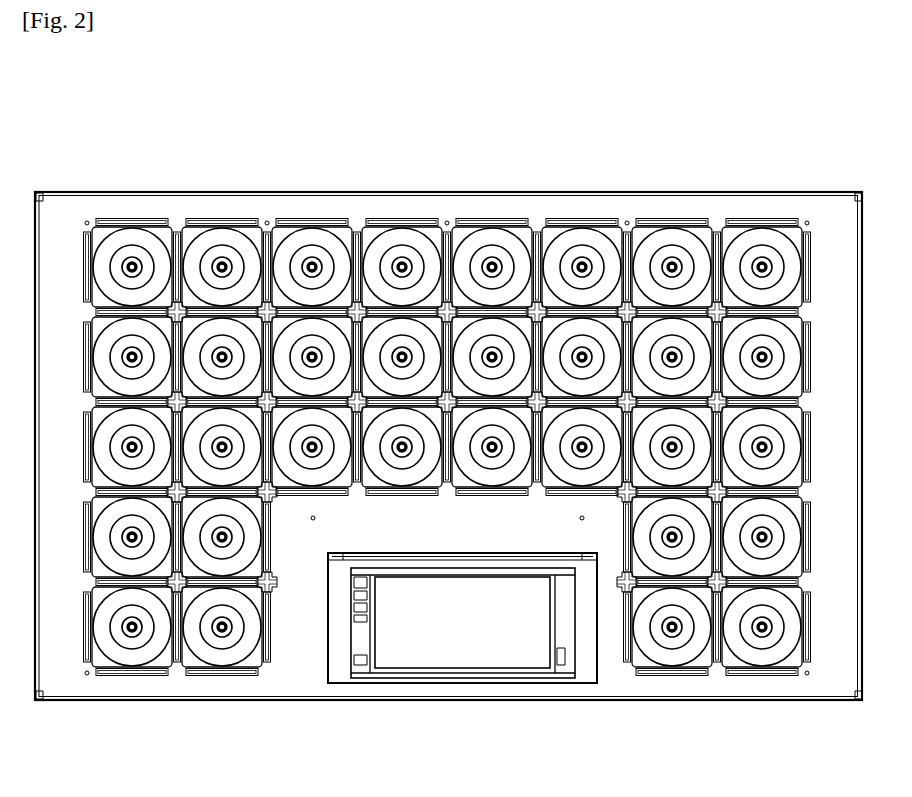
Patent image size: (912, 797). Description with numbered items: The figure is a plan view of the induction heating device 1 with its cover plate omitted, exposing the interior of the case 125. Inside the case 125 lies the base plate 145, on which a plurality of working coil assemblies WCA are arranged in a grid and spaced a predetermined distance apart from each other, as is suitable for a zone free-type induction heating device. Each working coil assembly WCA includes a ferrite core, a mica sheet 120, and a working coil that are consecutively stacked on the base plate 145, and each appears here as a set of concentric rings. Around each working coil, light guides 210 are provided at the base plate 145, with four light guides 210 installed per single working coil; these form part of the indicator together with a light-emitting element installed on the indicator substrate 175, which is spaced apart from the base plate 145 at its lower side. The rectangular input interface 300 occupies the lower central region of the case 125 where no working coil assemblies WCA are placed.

The induction heating device 1 is at (145, 66).
The case 125 is at (263, 192).
The base plate 145 is at (305, 680).
The working coil assembly WCA is at (120, 648).
The light guide 210 is at (125, 675).
The mica sheet 120 is at (165, 660).
The indicator substrate 175 is at (182, 591).
The input interface 300 is at (467, 643).